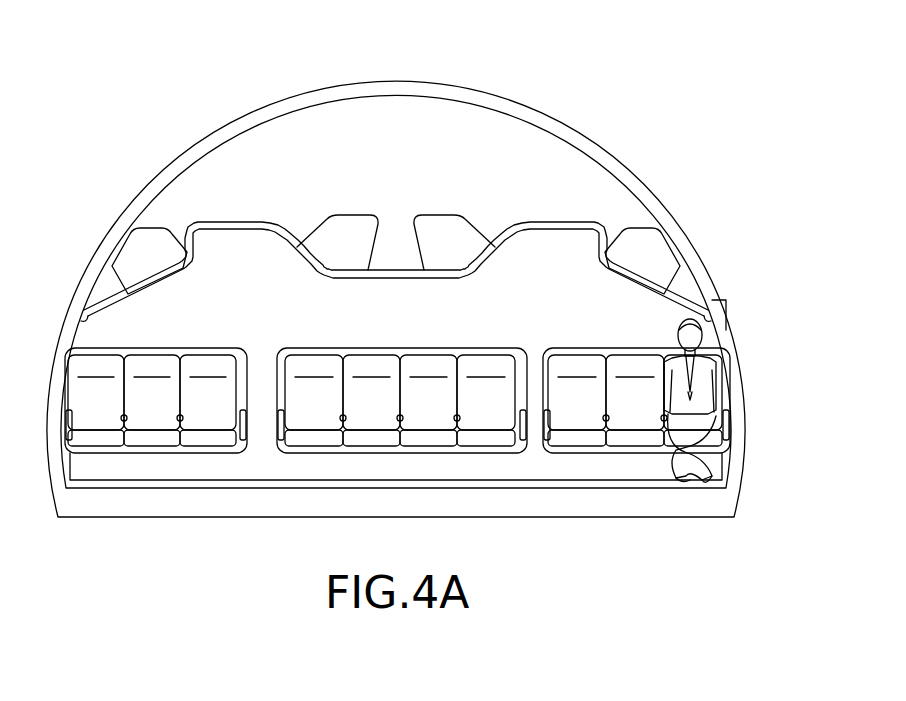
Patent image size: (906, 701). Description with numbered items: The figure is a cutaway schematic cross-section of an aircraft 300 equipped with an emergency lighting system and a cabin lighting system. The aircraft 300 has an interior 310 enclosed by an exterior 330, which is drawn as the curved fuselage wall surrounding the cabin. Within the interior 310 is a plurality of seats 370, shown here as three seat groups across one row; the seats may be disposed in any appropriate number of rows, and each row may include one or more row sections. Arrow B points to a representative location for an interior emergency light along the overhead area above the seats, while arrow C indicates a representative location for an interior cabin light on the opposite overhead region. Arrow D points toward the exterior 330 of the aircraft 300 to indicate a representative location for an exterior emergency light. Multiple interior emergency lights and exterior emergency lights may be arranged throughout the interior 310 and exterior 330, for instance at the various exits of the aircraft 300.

The aircraft 300 is at (690, 110).
The exterior 330 is at (88, 257).
The interior 310 is at (416, 318).
The seats 370 is at (210, 348).
The arrow B is at (232, 224).
The arrow C is at (555, 216).
The arrow D is at (718, 288).